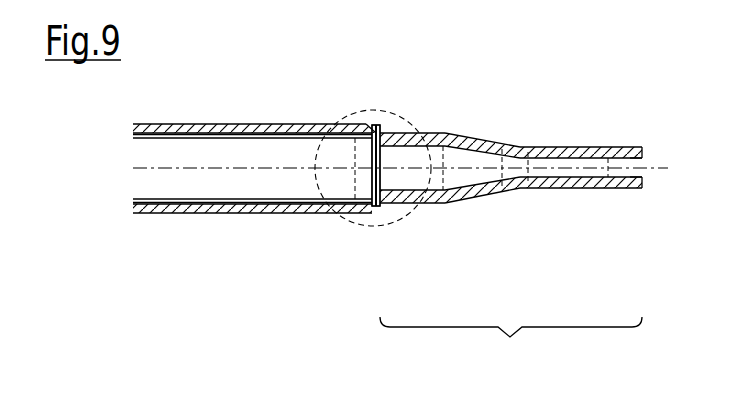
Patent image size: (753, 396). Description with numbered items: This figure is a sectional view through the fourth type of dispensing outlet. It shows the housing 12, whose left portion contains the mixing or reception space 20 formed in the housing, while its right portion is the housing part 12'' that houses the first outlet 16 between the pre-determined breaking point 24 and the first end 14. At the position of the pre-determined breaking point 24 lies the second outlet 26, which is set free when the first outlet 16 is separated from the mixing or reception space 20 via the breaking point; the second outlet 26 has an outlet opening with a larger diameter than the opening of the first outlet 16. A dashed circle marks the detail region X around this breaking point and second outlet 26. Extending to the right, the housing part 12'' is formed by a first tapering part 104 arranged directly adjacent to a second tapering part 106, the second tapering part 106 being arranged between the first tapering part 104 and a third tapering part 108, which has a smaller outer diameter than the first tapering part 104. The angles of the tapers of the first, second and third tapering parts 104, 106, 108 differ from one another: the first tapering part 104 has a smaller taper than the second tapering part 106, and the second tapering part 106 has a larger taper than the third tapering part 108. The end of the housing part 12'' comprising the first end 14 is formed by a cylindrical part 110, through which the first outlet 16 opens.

The housing 12 is at (254, 209).
The mixing or reception space 20 is at (203, 214).
The pre-determined breaking point 24 is at (376, 134).
The second outlet 26 is at (376, 165).
The detail region X is at (419, 206).
The first tapering part 104 is at (430, 203).
The second tapering part 106 is at (488, 201).
The third tapering part 108 is at (527, 197).
The cylindrical part 110 is at (602, 147).
The first end 14 is at (633, 189).
The first outlet 16 is at (643, 157).
The housing part 12'' is at (511, 343).